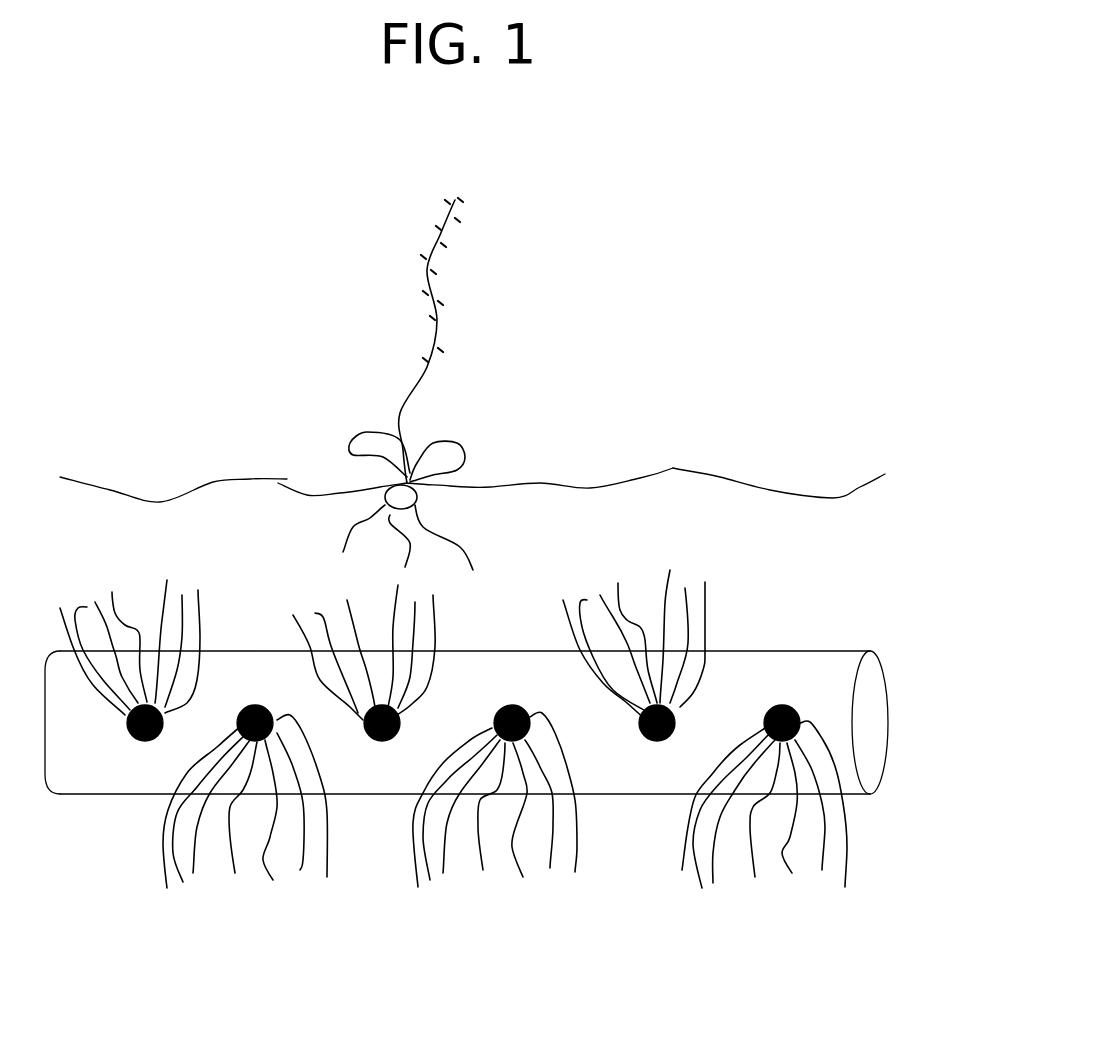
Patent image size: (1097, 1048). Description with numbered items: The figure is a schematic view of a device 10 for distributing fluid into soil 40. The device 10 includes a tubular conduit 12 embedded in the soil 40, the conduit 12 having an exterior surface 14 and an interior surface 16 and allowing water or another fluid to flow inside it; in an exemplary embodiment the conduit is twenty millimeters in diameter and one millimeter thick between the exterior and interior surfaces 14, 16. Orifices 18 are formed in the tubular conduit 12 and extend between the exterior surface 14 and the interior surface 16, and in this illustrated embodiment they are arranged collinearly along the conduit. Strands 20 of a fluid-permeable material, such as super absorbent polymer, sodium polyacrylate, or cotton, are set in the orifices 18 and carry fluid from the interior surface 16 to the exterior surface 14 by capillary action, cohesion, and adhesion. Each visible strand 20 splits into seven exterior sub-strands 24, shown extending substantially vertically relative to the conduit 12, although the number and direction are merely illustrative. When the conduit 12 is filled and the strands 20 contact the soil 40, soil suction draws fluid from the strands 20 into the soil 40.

The device 10 is at (504, 711).
The tubular conduit 12 is at (543, 662).
The exterior surface 14 is at (630, 777).
The interior surface 16 is at (865, 732).
The orifices 18 is at (130, 742).
The strands 20 is at (215, 615).
The exterior sub-strands 24 is at (255, 858).
The soil 40 is at (745, 502).